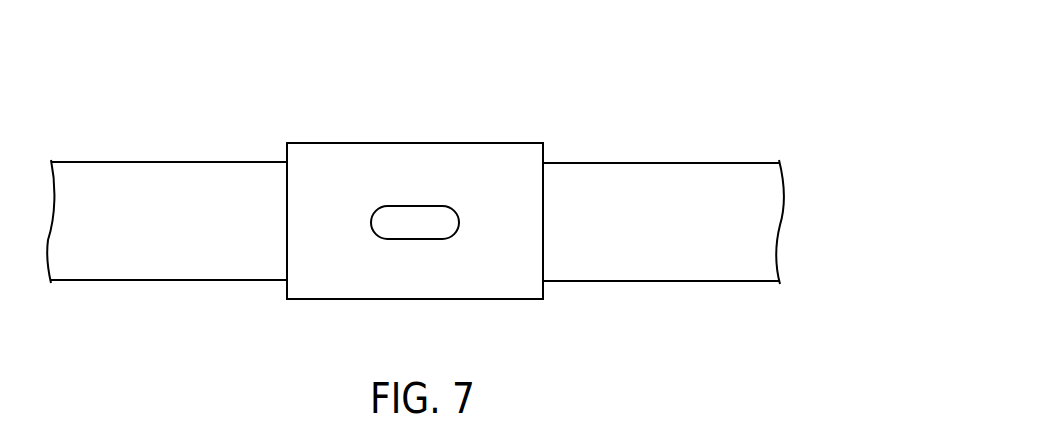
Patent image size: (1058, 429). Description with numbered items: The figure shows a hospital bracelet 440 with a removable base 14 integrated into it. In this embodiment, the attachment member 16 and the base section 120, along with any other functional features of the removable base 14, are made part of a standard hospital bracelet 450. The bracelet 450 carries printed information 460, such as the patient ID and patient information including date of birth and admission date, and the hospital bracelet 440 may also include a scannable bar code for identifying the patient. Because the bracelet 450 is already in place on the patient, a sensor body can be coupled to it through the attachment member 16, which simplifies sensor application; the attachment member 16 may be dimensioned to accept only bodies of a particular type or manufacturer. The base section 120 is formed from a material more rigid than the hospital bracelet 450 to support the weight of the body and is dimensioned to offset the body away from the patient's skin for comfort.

The hospital bracelet 440 is at (415, 207).
The standard hospital bracelet 450 is at (167, 280).
The printed information 460 is at (187, 178).
The removable base 14 is at (373, 300).
The base section 120 is at (414, 153).
The attachment member 16 is at (436, 242).